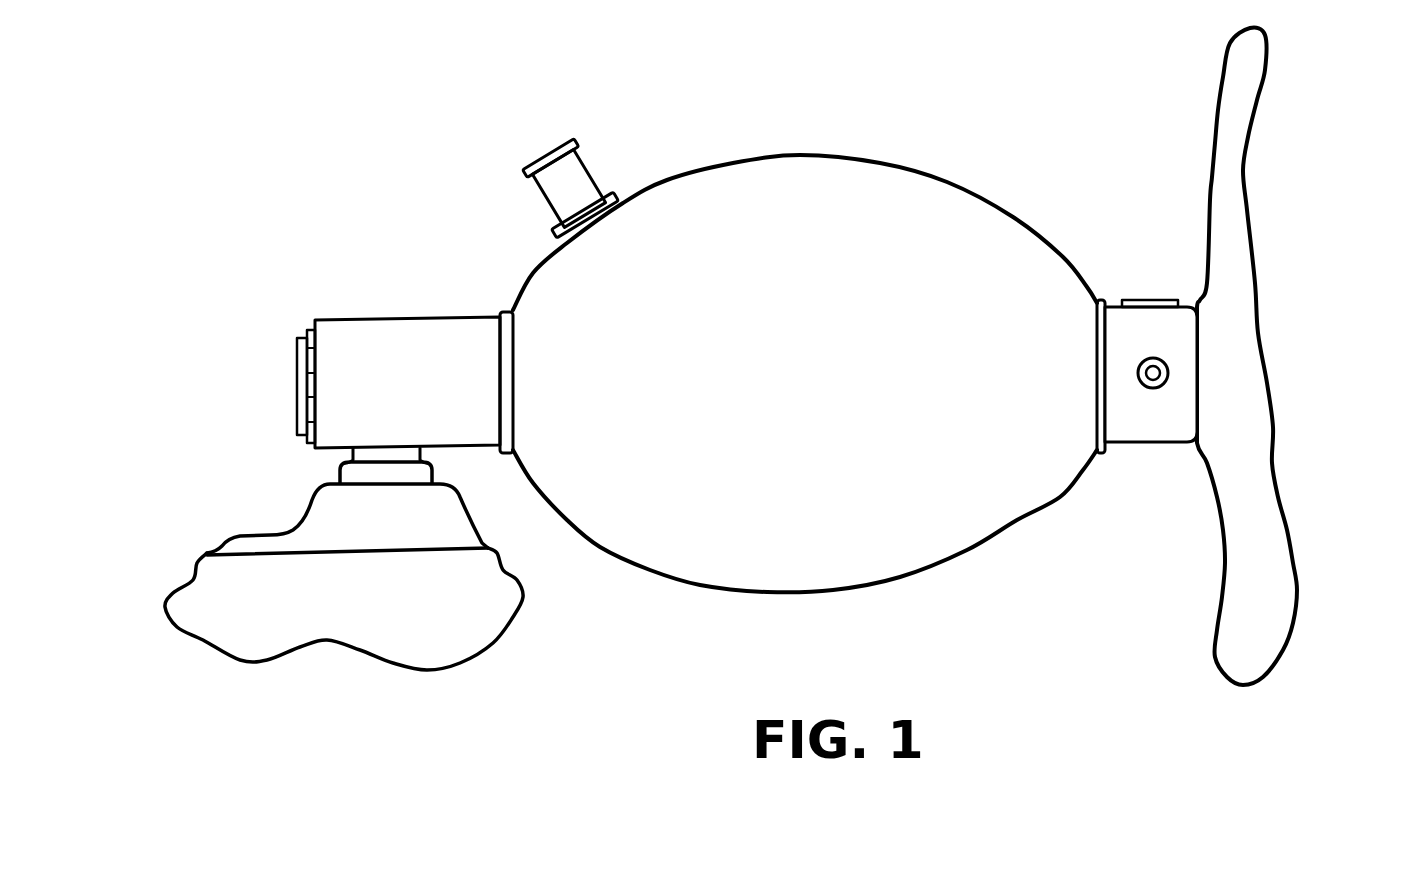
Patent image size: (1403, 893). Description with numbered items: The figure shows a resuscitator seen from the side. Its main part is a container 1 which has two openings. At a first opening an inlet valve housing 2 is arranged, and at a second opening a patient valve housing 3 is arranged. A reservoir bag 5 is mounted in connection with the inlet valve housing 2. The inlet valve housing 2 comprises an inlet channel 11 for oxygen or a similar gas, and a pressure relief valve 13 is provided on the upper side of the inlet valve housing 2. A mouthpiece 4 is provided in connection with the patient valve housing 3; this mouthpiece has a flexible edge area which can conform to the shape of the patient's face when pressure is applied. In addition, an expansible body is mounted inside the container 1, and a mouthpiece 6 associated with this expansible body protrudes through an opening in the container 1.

The container 1 is at (950, 240).
The inlet valve housing 2 is at (1140, 338).
The patient valve housing 3 is at (418, 365).
The mouthpiece 4 is at (277, 603).
The reservoir bag 5 is at (1247, 498).
The mouthpiece 6 is at (557, 178).
The inlet channel 11 is at (1168, 370).
The pressure relief valve 13 is at (1153, 298).